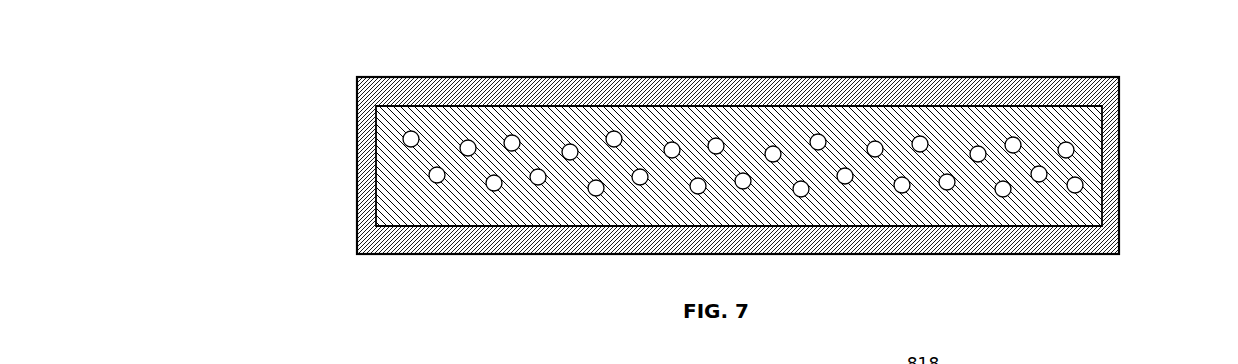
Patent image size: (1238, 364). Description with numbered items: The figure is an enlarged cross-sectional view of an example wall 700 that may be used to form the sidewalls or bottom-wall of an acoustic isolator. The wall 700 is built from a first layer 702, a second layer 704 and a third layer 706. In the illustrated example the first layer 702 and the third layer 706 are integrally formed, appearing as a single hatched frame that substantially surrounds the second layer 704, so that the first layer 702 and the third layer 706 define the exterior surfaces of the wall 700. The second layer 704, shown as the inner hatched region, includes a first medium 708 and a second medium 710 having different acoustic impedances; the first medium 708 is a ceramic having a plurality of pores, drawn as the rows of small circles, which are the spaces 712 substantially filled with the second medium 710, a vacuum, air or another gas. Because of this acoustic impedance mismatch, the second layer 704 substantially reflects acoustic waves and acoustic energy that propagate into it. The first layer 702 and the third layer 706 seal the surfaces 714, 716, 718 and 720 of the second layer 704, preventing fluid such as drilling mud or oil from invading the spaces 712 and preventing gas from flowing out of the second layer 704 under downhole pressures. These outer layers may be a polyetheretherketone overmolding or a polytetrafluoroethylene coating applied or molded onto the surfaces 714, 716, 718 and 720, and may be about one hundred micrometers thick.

The wall 700 is at (345, 74).
The first layer 702 is at (1018, 95).
The second layer 704 is at (1079, 131).
The third layer 706 is at (1045, 238).
The first medium 708 is at (745, 130).
The second medium 710 is at (614, 139).
The spaces 712 is at (1003, 189).
The surface of the second layer 714 is at (518, 108).
The surface of the second layer 716 is at (1102, 159).
The surface of the second layer 718 is at (535, 227).
The surface of the second layer 720 is at (377, 173).